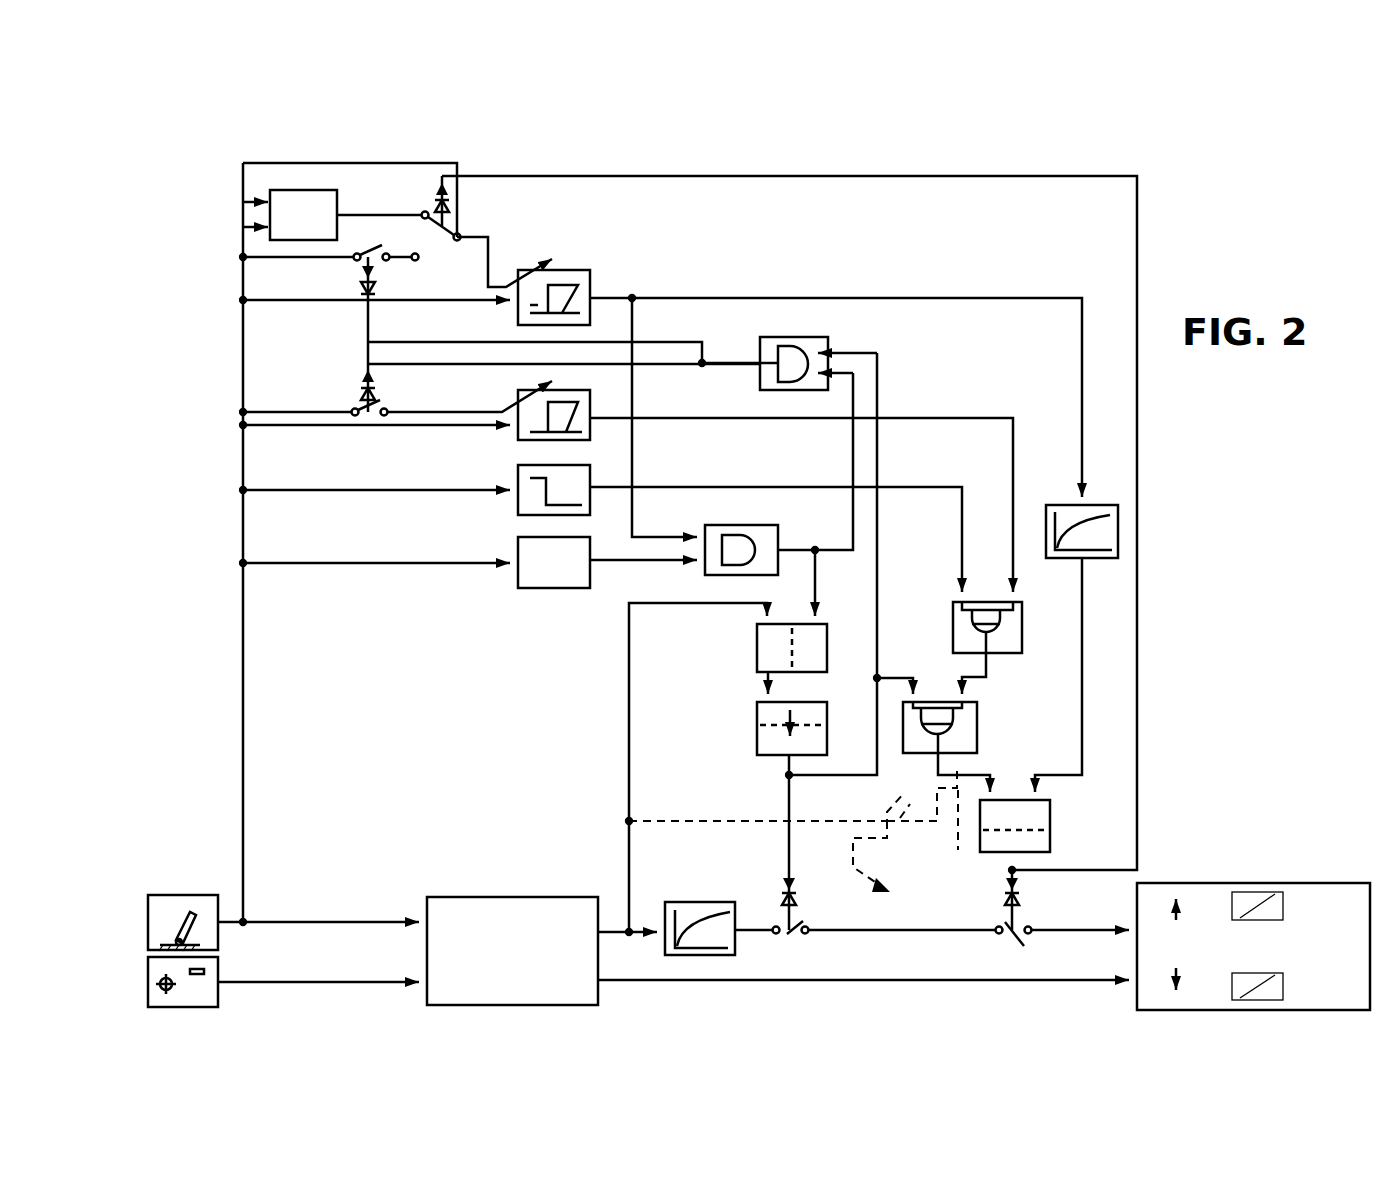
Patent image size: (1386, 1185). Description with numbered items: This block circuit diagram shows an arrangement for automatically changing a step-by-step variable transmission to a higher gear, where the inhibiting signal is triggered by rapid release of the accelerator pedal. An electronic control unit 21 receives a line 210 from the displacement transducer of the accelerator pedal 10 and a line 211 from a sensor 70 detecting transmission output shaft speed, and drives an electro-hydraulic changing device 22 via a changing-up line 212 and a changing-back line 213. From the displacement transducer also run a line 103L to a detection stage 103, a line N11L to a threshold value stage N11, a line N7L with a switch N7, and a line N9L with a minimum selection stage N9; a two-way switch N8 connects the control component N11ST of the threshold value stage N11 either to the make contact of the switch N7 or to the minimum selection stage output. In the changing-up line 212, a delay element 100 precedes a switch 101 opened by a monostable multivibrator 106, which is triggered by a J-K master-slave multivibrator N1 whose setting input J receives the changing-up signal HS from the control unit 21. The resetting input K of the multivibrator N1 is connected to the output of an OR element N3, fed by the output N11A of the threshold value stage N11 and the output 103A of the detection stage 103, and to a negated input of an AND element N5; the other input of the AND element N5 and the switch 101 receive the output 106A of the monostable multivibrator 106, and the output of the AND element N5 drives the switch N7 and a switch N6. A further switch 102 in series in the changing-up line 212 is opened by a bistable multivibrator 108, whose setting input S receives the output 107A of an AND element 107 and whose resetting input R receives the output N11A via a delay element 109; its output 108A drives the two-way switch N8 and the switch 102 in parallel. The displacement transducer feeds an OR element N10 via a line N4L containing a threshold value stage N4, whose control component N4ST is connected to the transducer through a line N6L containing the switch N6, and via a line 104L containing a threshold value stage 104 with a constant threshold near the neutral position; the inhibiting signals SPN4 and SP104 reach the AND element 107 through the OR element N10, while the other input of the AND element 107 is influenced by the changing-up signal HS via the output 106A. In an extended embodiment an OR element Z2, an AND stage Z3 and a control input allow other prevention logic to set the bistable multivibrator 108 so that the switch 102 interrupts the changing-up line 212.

The minimum selection stage N9 is at (260, 211).
The line N9L is at (409, 213).
The output of bistable multivibrator 108A is at (452, 181).
The two-way switch N8 is at (446, 240).
The line N7L is at (282, 261).
The switch N7 is at (360, 247).
The control component of threshold value stage N11 N11ST is at (555, 258).
The threshold value stage N11 is at (592, 293).
The line N11L is at (944, 294).
The AND element N5 is at (760, 350).
The line N6L is at (270, 406).
The switch N6 is at (350, 403).
The control component of threshold value stage N4 N4ST is at (552, 380).
The threshold value stage N4 is at (518, 446).
The line N4L is at (944, 414).
The inhibiting signal SPN4 is at (1010, 480).
The line 104L is at (698, 484).
The threshold value stage 104 is at (518, 516).
The second inhibiting signal SP104 is at (962, 574).
The delay element 109 is at (1098, 505).
The line 103L is at (367, 572).
The detection stage 103 is at (518, 590).
The output of detection stage 103A is at (688, 562).
The output of threshold value stage N11 N11A is at (660, 537).
The OR element N3 is at (780, 537).
The changing-up signal HS is at (767, 608).
The J-K master-slave multivibrator N1 is at (827, 660).
The OR element N10 is at (953, 640).
The AND element 107 is at (970, 712).
The monostable multivibrator 106 is at (757, 750).
The output of AND element 107 107A is at (990, 788).
The AND stage Z3 is at (774, 793).
The OR element Z2 is at (922, 819).
The bistable multivibrator 108 is at (1050, 842).
The output of monostable multivibrator 106A is at (792, 858).
The accelerator pedal 10 is at (165, 895).
The sensor 70 is at (148, 966).
The line 210 is at (360, 920).
The line 211 is at (372, 980).
The electronic control unit 21 is at (480, 900).
The delay element 100 is at (697, 902).
The changing-up line 212 is at (754, 922).
The switch 101 is at (794, 938).
The switch 102 is at (1030, 940).
The changing-back line 213 is at (765, 982).
The electro-hydraulic changing device 22 is at (1218, 892).